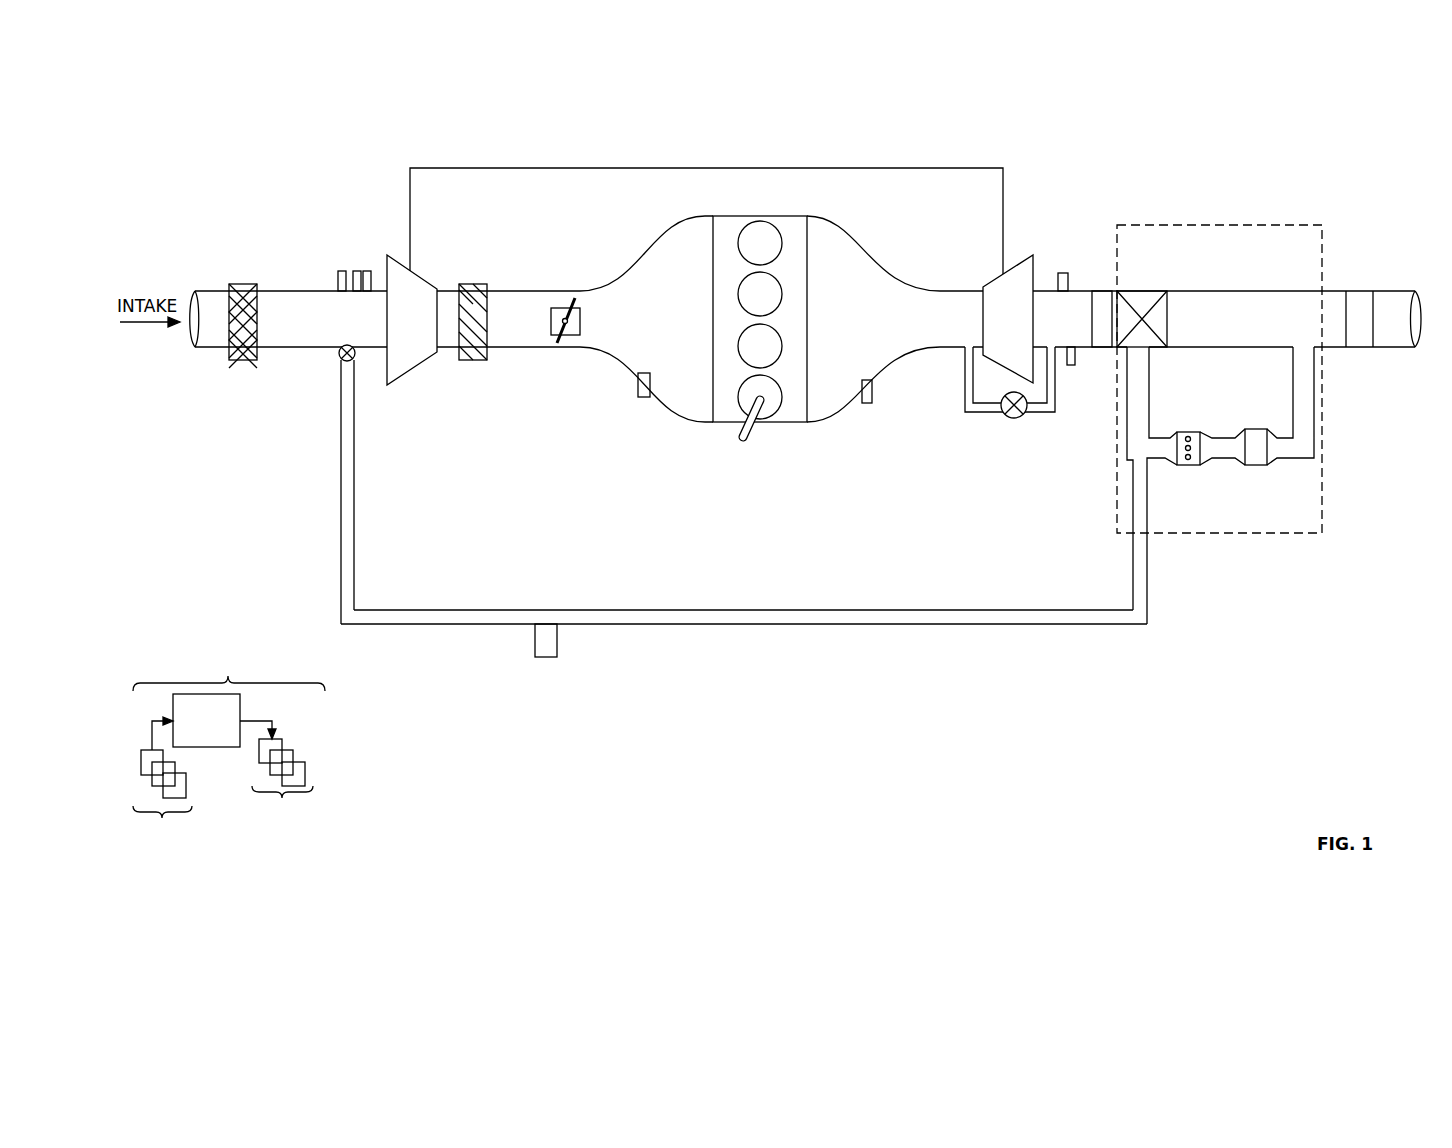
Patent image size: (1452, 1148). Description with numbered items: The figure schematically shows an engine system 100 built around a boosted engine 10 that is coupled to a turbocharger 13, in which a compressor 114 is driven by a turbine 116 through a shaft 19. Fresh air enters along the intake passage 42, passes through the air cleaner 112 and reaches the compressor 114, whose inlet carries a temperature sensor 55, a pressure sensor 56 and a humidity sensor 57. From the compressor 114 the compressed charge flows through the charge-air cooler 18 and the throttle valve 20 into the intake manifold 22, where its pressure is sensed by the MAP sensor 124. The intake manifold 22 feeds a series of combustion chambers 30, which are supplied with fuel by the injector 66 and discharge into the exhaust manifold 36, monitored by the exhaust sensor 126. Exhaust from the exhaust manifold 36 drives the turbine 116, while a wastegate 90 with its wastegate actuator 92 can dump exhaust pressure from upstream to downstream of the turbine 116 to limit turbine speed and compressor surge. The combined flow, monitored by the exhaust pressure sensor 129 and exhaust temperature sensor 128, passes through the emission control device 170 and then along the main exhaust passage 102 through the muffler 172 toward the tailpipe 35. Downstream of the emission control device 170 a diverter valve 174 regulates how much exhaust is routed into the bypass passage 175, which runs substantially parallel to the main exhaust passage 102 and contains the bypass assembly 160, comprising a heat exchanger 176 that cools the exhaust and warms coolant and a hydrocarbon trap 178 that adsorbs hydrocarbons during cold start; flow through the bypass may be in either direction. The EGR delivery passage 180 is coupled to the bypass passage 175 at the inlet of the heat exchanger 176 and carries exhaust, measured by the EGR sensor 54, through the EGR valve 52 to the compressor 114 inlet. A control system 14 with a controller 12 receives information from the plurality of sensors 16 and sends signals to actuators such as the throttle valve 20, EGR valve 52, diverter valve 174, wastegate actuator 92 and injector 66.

The engine 10 is at (808, 302).
The controller 12 is at (206, 720).
The turbocharger 13 is at (406, 393).
The control system 14 is at (232, 732).
The sensors 16 is at (169, 788).
The charge-air cooler 18 is at (473, 284).
The shaft 19 is at (697, 168).
The throttle valve 20 is at (580, 331).
The intake manifold 22 is at (678, 329).
The combustion chambers 30 is at (778, 236).
The tailpipe 35 is at (1383, 291).
The exhaust manifold 36 is at (884, 329).
The intake passage 42 is at (213, 350).
The EGR valve 52 is at (338, 357).
The EGR sensor 54 is at (547, 638).
The compressor inlet temperature sensor 55 is at (341, 271).
The compressor inlet pressure sensor 56 is at (357, 271).
The compressor inlet humidity sensor 57 is at (367, 271).
The fuel injector 66 is at (757, 430).
The wastegate 90 is at (965, 412).
The wastegate actuator 92 is at (1008, 418).
The engine system 100 is at (1294, 176).
The main exhaust passage 102 is at (1085, 350).
The air cleaner 112 is at (245, 284).
The compressor 114 is at (412, 320).
The turbine 116 is at (1008, 319).
The manifold air pressure sensor 124 is at (637, 391).
The exhaust sensor 126 is at (872, 390).
The exhaust temperature sensor 128 is at (1071, 366).
The exhaust pressure sensor 129 is at (1063, 273).
The bypass assembly 160 is at (1187, 212).
The emission control device 170 is at (1102, 291).
The muffler 172 is at (1358, 291).
The diverter valve 174 is at (1137, 291).
The bypass passage 175 is at (1157, 460).
The heat exchanger 176 is at (1188, 432).
The hydrocarbon trap 178 is at (1250, 429).
The EGR delivery passage 180 is at (800, 610).